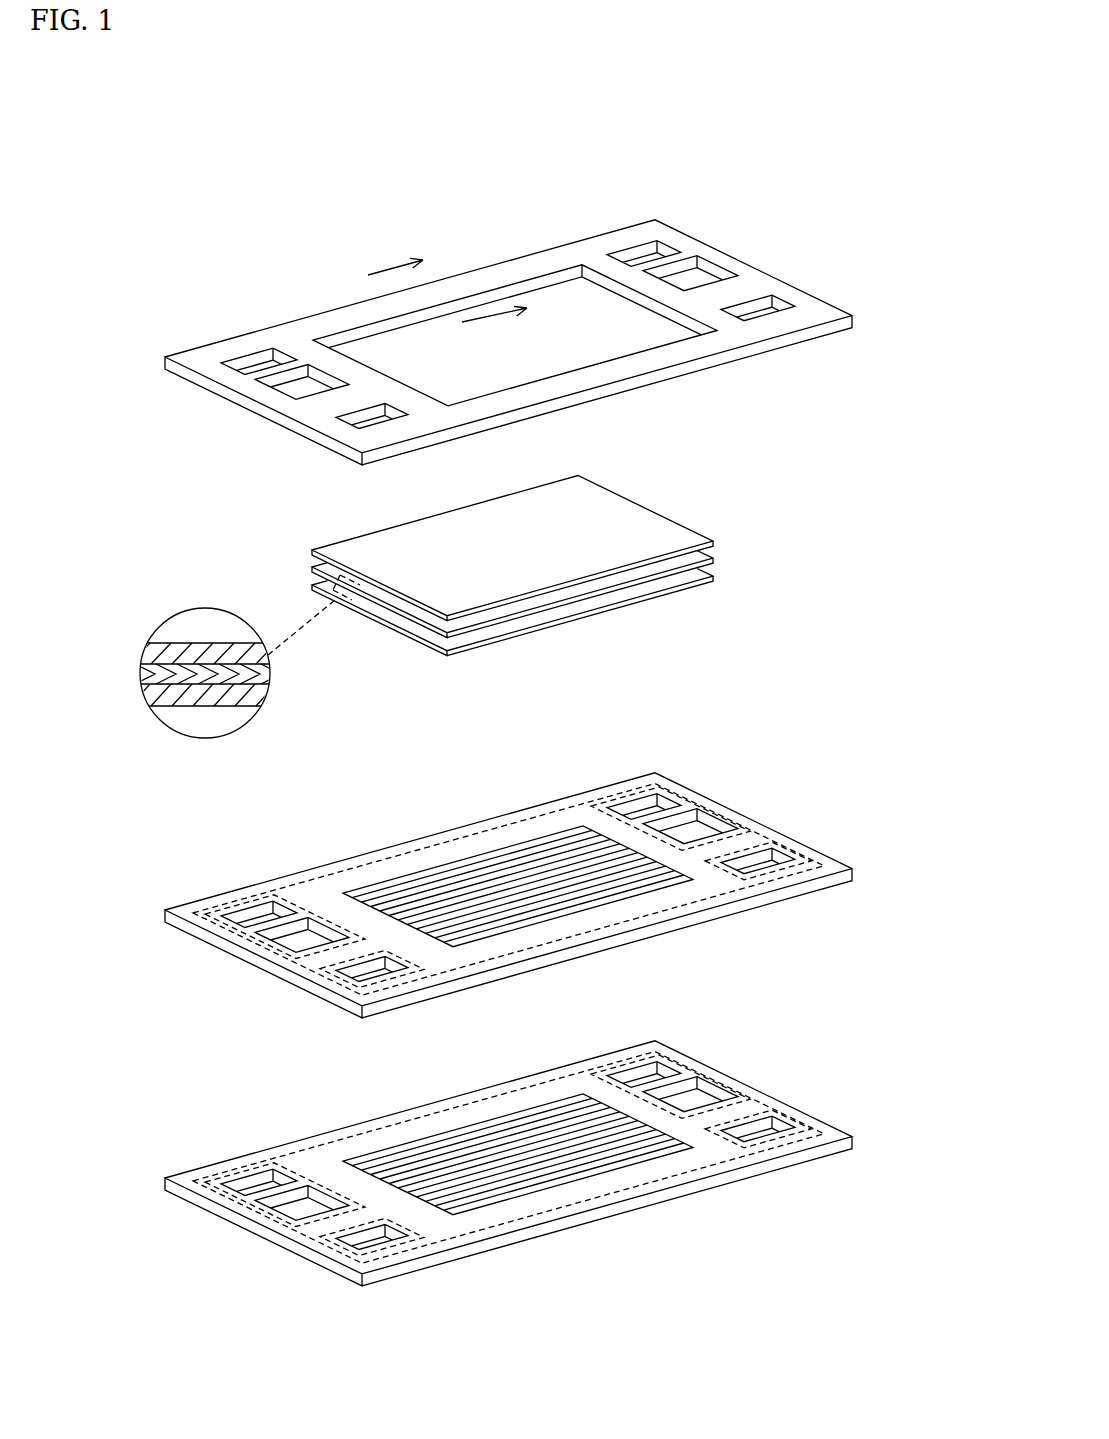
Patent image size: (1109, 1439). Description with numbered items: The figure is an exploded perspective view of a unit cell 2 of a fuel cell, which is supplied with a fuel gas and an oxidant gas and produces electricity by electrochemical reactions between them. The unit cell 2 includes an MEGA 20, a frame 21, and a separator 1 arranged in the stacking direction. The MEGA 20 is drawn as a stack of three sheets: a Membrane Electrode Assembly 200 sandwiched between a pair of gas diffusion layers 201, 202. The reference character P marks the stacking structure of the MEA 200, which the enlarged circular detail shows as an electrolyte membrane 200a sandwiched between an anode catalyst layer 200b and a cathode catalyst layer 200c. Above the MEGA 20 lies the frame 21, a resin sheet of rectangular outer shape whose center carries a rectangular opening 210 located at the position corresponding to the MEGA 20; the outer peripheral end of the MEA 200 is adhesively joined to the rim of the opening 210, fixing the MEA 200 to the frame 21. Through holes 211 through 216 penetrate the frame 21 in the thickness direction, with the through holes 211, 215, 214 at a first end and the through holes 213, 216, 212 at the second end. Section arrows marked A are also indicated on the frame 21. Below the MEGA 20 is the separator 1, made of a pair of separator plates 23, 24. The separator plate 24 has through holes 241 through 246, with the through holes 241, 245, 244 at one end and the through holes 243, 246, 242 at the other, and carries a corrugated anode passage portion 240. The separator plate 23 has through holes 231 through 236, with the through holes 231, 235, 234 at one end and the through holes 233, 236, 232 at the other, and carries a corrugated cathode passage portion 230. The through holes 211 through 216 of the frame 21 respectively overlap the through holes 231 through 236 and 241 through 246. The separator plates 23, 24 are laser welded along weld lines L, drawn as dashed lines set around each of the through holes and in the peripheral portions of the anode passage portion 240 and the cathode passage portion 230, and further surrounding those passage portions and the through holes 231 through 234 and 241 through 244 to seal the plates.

The separator 1 is at (903, 833).
The unit cell 2 is at (661, 144).
The MEGA 20 is at (285, 525).
The membrane electrode assembly 200 is at (712, 556).
The gas diffusion layer 201 is at (712, 576).
The gas diffusion layer 202 is at (688, 530).
The electrolyte membrane 200a is at (141, 669).
The anode catalyst layer 200b is at (144, 696).
The cathode catalyst layer 200c is at (144, 653).
The frame 21 is at (735, 258).
The opening 210 is at (527, 280).
The through hole 211 is at (222, 358).
The through hole 212 is at (790, 304).
The through hole 213 is at (652, 248).
The through hole 214 is at (336, 440).
The through hole 215 is at (263, 404).
The through hole 216 is at (740, 276).
The separator plate 23 is at (720, 1073).
The cathode passage portion 230 is at (345, 1160).
The through hole 231 is at (200, 1193).
The through hole 232 is at (773, 1132).
The through hole 233 is at (665, 1068).
The through hole 234 is at (320, 1252).
The through hole 235 is at (250, 1218).
The through hole 236 is at (716, 1090).
The separator plate 24 is at (787, 838).
The anode passage portion 240 is at (573, 915).
The through hole 241 is at (200, 925).
The through hole 242 is at (777, 866).
The through hole 243 is at (658, 802).
The through hole 244 is at (320, 984).
The through hole 245 is at (250, 950).
The through hole 246 is at (716, 823).
The stacking structure P is at (159, 663).
The weld line L is at (662, 782).
The section line A is at (458, 284).